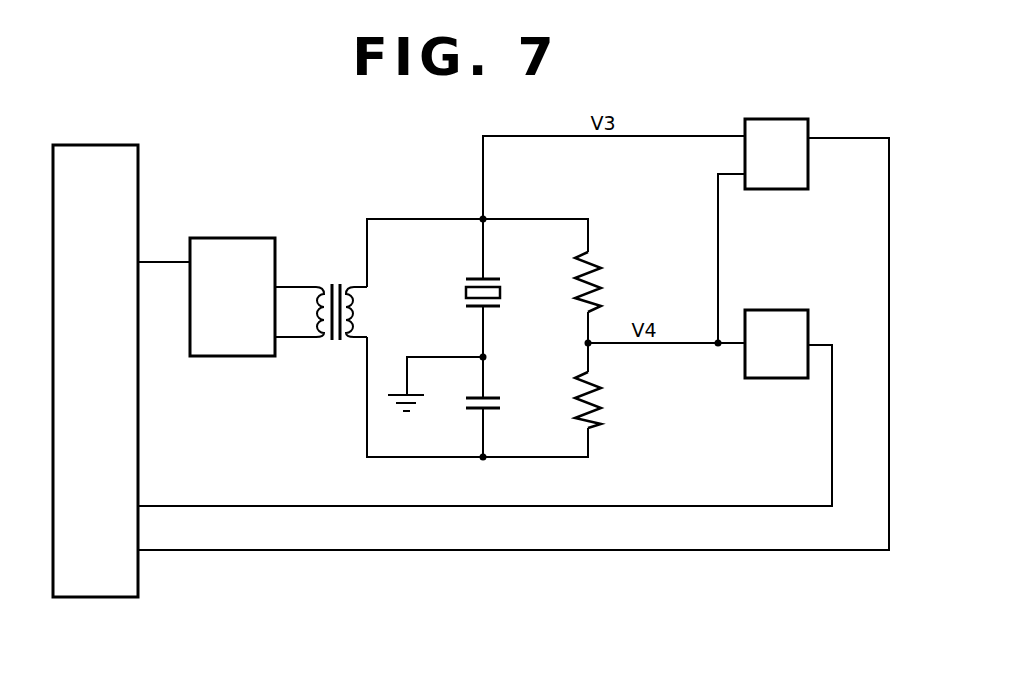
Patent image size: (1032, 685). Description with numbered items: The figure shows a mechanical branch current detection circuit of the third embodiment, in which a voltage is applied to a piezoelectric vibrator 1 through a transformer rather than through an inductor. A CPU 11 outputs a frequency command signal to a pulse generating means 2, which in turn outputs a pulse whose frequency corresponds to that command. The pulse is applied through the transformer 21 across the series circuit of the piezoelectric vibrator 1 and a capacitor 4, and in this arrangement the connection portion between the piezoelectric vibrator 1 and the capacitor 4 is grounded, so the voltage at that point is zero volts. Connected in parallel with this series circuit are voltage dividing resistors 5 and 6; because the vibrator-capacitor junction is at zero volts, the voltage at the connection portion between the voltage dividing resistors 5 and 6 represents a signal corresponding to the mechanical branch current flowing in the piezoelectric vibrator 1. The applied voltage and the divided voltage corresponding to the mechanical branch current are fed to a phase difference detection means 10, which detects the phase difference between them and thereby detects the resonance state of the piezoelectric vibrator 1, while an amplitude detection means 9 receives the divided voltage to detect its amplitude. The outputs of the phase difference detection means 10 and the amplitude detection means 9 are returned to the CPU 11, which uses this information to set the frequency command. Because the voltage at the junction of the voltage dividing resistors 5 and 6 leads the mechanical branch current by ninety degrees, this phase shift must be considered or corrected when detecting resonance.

The CPU 11 is at (110, 143).
The pulse generating means 2 is at (250, 236).
The transformer 21 is at (305, 288).
The piezoelectric vibrator 1 is at (505, 289).
The capacitor 4 is at (505, 403).
The voltage dividing resistor 5 is at (604, 281).
The voltage dividing resistor 6 is at (604, 397).
The phase difference detection means 10 is at (808, 163).
The amplitude detection means 9 is at (808, 318).